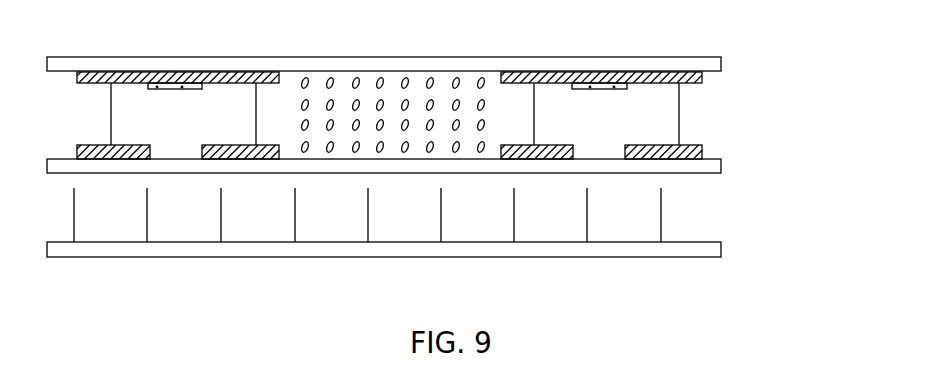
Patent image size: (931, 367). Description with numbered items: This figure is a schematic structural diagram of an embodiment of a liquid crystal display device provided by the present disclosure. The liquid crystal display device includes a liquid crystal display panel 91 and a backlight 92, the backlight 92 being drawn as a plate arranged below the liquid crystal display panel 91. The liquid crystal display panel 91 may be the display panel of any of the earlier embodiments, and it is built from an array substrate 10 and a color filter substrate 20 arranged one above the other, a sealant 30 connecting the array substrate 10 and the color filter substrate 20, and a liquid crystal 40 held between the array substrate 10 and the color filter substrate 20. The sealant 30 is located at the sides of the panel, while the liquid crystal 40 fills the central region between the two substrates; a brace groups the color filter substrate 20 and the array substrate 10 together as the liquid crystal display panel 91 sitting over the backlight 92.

The array substrate 10 is at (718, 168).
The color filter substrate 20 is at (717, 63).
The sealant 30 is at (118, 134).
The liquid crystal 40 is at (395, 82).
The liquid crystal display panel 91 is at (803, 98).
The backlight 92 is at (718, 250).